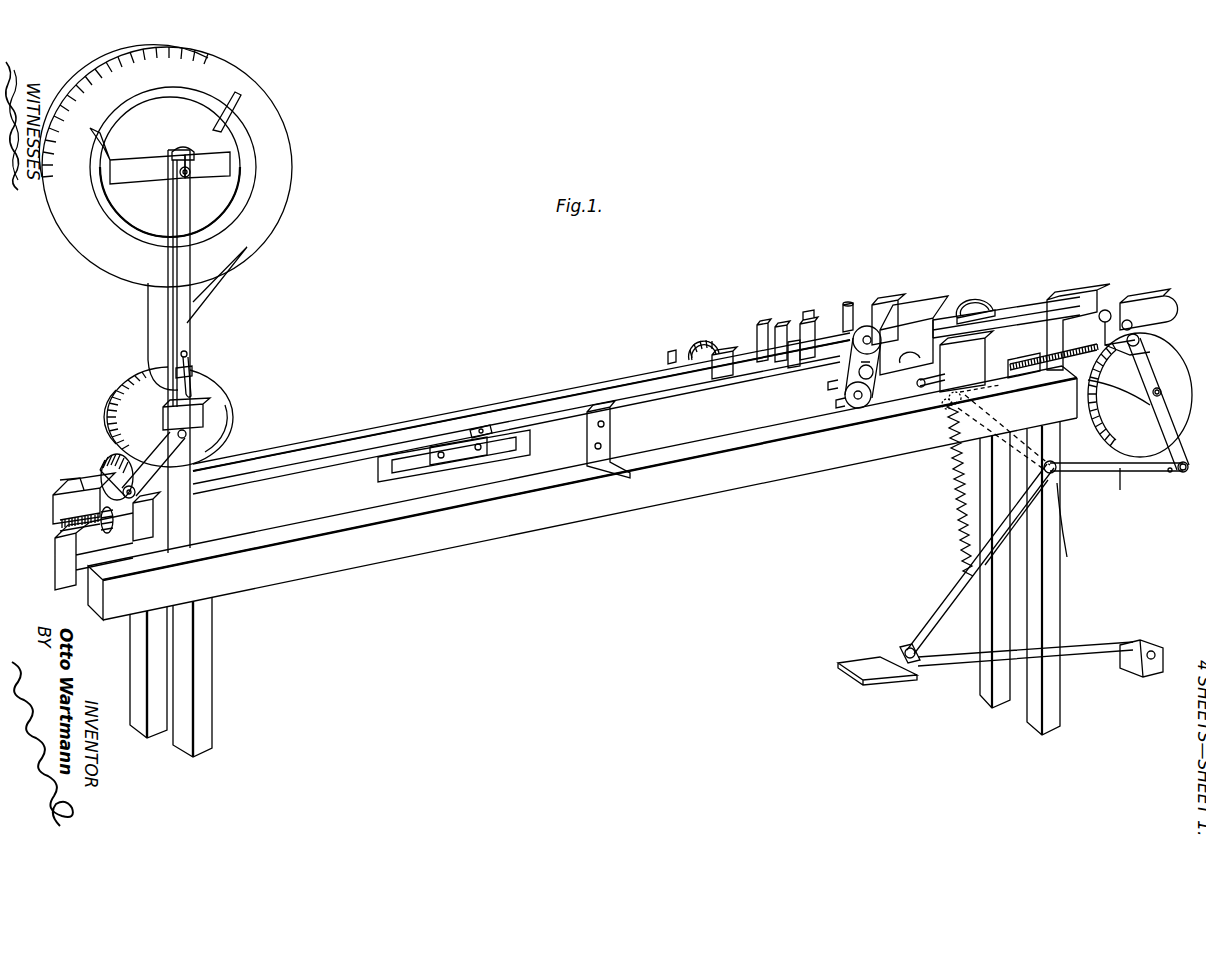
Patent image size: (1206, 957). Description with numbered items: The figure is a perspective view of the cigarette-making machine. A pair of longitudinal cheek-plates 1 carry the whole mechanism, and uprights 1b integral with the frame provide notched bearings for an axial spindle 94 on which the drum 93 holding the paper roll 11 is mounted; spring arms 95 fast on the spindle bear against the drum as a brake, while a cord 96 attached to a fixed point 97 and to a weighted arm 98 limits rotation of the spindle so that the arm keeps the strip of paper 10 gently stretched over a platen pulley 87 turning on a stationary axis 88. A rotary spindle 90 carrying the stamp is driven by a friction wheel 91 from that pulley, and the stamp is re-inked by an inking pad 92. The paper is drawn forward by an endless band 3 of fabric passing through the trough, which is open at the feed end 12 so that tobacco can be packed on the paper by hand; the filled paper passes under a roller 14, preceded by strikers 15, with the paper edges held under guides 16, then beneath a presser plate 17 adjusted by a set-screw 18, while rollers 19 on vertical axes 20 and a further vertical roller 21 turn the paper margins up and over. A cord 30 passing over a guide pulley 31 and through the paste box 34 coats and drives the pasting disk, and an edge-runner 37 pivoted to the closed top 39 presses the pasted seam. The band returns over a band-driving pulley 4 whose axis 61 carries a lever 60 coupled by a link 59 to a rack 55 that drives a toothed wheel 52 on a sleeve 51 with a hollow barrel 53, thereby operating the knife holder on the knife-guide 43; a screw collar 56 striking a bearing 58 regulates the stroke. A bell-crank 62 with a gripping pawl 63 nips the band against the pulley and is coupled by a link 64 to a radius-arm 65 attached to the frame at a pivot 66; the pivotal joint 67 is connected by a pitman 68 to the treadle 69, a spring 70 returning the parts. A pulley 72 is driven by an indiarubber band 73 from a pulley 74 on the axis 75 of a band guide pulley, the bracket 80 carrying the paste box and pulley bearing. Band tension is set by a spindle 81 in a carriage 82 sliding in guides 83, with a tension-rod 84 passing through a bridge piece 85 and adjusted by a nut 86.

The cheek-plate 1 is at (582, 561).
The upright 1b is at (247, 247).
The endless band 3 is at (500, 420).
The band-driving pulley 4 is at (1110, 470).
The strip of paper 10 is at (224, 288).
The roll 11 is at (284, 165).
The open portion of trough 12 is at (566, 375).
The roller 14 is at (694, 345).
The striker 15 is at (668, 355).
The guide 16 is at (620, 385).
The presser plate 17 is at (735, 352).
The set-screw 18 is at (796, 340).
The roller 19 is at (762, 322).
The vertical axis 20 is at (782, 322).
The vertical roller 21 is at (808, 360).
The cord 30 is at (868, 326).
The guide pulley 31 is at (853, 315).
The box 34 is at (920, 325).
The edge-runner 37 is at (980, 306).
The closed top 39 is at (1040, 296).
The knife-guide 43 is at (1140, 300).
The sleeve 51 is at (966, 361).
The toothed wheel 52 is at (1140, 344).
The hollow barrel 53 is at (1094, 420).
The rack 55 is at (1025, 378).
The screw collar 56 is at (948, 406).
The bearing 58 is at (1050, 325).
The link 59 is at (1108, 310).
The lever 60 is at (1160, 455).
The axis 61 is at (1160, 388).
The bell-crank 62 is at (1182, 473).
The gripping pawl 63 is at (1170, 474).
The link 64 is at (1118, 473).
The radius-arm 65 is at (1012, 448).
The pivot 66 is at (945, 402).
The pivotal joint 67 is at (1068, 540).
The pitman 68 is at (965, 578).
The treadle 69 is at (862, 662).
The spring 70 is at (955, 492).
The pulley 72 is at (892, 300).
The indiarubber band 73 is at (838, 388).
The pulley 74 is at (858, 410).
The axis 75 is at (870, 405).
The bracket 80 is at (918, 382).
The spindle 81 is at (478, 428).
The carriage 82 is at (440, 448).
The guides 83 is at (414, 462).
The tension-rod 84 is at (70, 529).
The bridge piece 85 is at (110, 530).
The nut 86 is at (70, 560).
The pulley 87 is at (218, 428).
The stationary axis 88 is at (188, 436).
The rotary spindle 90 is at (150, 492).
The friction wheel 91 is at (100, 462).
The inking pad 92 is at (76, 480).
The drum 93 is at (118, 210).
The axial spindle 94 is at (193, 158).
The spring arm 95 is at (134, 168).
The cord 96 is at (193, 370).
The fixed point 97 is at (188, 355).
The weighted arm 98 is at (205, 410).